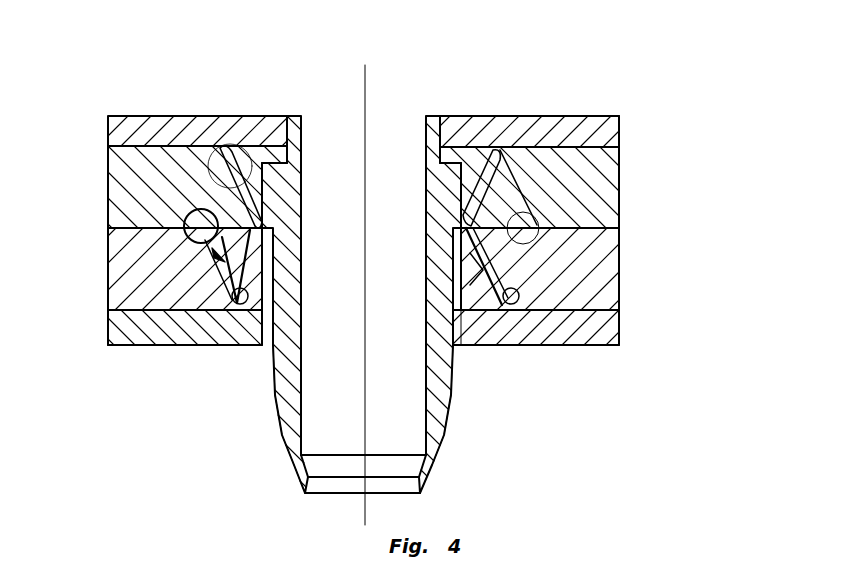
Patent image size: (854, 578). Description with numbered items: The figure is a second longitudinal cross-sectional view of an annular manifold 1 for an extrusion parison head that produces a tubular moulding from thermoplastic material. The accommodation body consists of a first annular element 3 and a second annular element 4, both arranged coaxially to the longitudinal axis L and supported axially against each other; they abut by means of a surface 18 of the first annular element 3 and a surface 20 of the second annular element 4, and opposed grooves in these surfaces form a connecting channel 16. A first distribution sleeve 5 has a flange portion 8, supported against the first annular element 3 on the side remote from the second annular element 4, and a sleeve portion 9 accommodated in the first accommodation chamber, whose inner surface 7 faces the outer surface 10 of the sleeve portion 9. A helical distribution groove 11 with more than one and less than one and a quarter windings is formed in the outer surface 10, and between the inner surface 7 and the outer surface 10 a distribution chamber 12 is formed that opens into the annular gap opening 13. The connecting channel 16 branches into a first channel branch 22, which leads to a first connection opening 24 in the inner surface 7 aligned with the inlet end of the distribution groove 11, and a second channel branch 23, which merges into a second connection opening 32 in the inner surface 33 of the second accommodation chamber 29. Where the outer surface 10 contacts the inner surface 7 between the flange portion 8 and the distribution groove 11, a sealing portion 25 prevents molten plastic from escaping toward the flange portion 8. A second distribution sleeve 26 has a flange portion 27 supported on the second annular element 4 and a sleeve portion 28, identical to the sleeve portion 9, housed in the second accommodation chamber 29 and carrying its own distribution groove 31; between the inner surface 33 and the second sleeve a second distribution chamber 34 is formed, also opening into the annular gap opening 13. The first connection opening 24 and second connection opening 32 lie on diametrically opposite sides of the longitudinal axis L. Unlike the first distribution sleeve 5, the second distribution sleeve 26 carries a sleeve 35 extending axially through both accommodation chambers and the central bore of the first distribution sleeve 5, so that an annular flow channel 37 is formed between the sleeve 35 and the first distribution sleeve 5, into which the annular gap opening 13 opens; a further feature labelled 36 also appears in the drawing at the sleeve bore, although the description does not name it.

The annular manifold 1 is at (694, 74).
The first annular element 3 is at (597, 291).
The second annular element 4 is at (600, 185).
The first distribution sleeve 5 is at (624, 322).
The inner surface 7 is at (477, 350).
The flange portion 8 is at (573, 347).
The sleeve portion 9 is at (432, 286).
The outer surface 10 is at (167, 350).
The distribution groove 11 is at (190, 346).
The distribution chamber 12 is at (440, 247).
The annular gap opening 13 is at (452, 228).
The connecting channel 16 is at (155, 346).
The surface 18 is at (137, 213).
The surface 20 is at (107, 253).
The first channel branch 22 is at (140, 287).
The second channel branch 23 is at (556, 262).
The first connection opening 24 is at (228, 348).
The sealing portion 25 is at (502, 348).
The second distribution sleeve 26 is at (624, 133).
The flange portion 27 is at (612, 114).
The sleeve portion 28 is at (445, 180).
The second accommodation chamber 29 is at (258, 130).
The distribution groove 31 is at (228, 148).
The second connection opening 32 is at (497, 148).
The inner surface 33 is at (277, 118).
The second distribution chamber 34 is at (425, 190).
The sleeve 35 is at (448, 420).
The inner surface 36 is at (425, 306).
The annular flow channel 37 is at (270, 352).
The longitudinal axis L is at (365, 82).